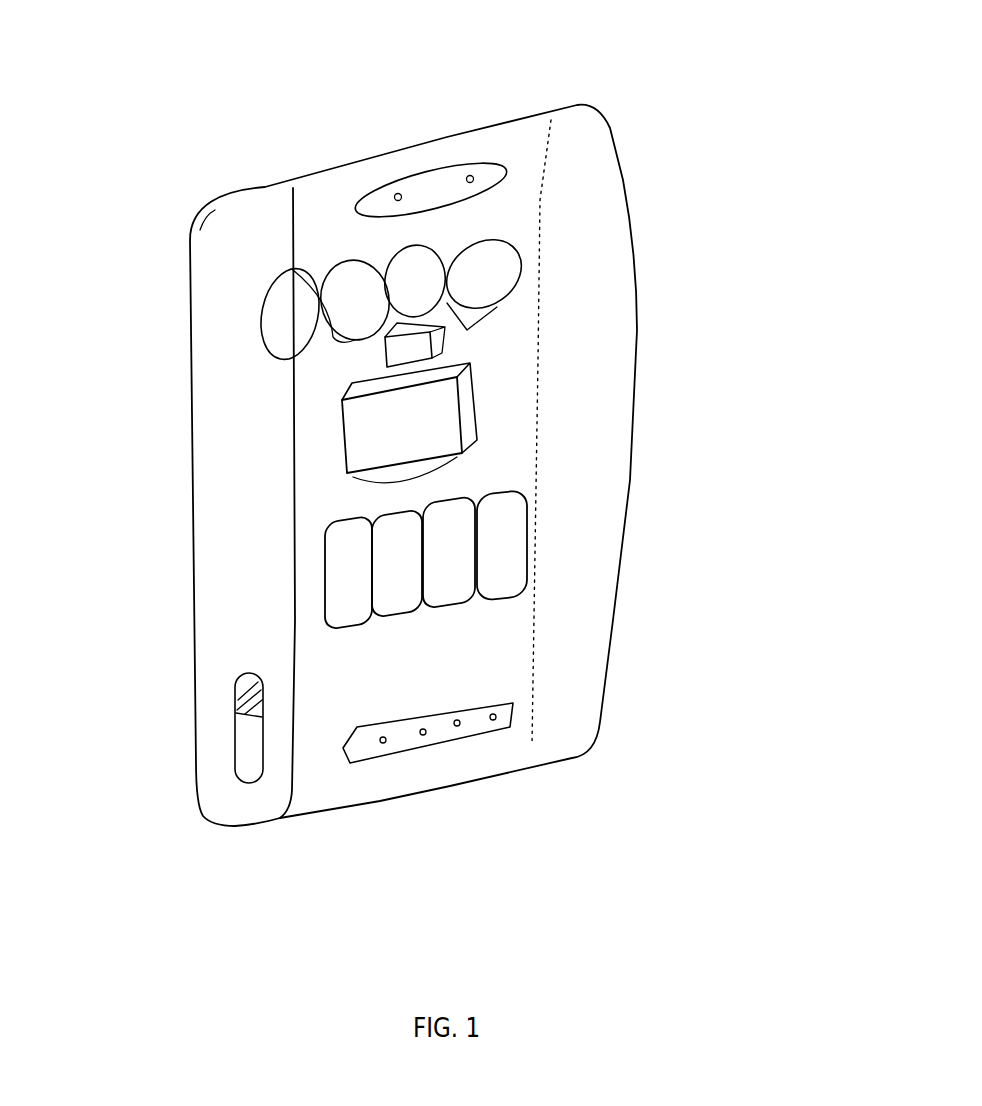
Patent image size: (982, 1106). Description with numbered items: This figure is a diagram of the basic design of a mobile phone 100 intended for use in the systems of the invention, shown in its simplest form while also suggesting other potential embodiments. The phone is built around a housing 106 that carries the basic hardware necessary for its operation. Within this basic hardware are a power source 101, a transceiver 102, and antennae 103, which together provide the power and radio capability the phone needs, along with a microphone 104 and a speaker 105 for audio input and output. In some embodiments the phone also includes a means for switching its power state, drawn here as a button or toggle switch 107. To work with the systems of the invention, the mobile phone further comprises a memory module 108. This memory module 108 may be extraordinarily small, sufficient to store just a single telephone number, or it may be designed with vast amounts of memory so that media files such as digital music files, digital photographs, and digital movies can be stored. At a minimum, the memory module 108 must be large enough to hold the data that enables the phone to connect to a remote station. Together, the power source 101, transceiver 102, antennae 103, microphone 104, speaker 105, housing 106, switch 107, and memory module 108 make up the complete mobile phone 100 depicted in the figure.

The mobile phone 100 is at (405, 777).
The power source 101 is at (527, 548).
The transceiver 102 is at (477, 413).
The antennae 103 is at (517, 280).
The microphone 104 is at (517, 713).
The speaker 105 is at (446, 168).
The housing 106 is at (290, 415).
The button or toggle switch 107 is at (237, 745).
The memory module 108 is at (445, 350).